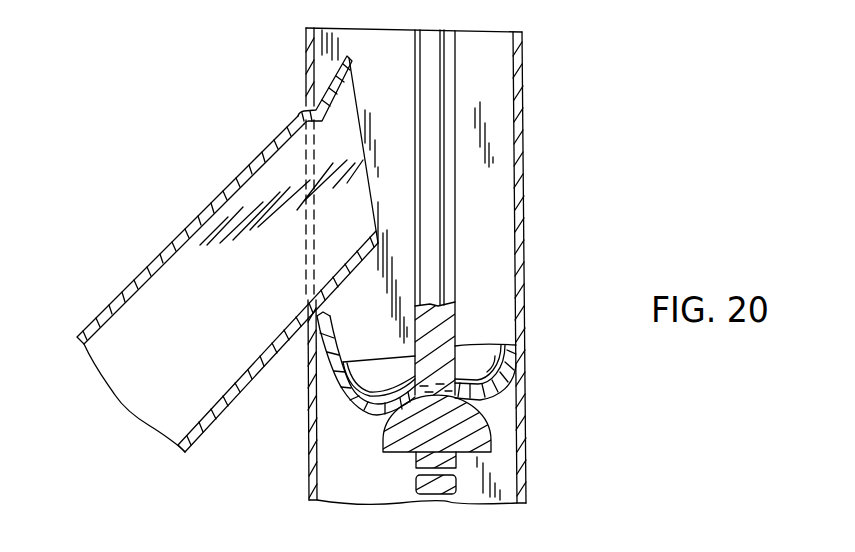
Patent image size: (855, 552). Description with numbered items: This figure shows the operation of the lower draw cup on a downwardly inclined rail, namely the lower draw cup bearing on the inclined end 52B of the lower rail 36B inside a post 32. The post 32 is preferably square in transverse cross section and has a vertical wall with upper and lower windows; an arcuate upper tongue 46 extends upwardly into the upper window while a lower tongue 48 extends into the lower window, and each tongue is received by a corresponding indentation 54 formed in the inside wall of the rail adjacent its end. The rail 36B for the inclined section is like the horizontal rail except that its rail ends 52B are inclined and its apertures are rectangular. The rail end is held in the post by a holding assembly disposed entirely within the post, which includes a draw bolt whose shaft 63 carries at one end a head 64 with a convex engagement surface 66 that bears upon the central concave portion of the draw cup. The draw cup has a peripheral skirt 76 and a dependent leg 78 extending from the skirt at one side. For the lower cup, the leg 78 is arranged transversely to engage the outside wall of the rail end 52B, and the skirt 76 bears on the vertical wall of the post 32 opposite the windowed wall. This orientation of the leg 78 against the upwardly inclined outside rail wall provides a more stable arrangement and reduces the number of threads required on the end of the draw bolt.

The post 32 is at (299, 57).
The arcuate upper tongue 46 is at (523, 85).
The lower tongue 48 is at (308, 105).
The indentation 54 is at (304, 118).
The rail for the inclined section 36B is at (198, 205).
The inclined rail end 52B is at (352, 270).
The dependent leg 78 is at (308, 352).
The shaft 63 is at (445, 285).
The peripheral skirt 76 is at (508, 352).
The convex engagement surface 66 is at (486, 403).
The head 64 is at (488, 438).